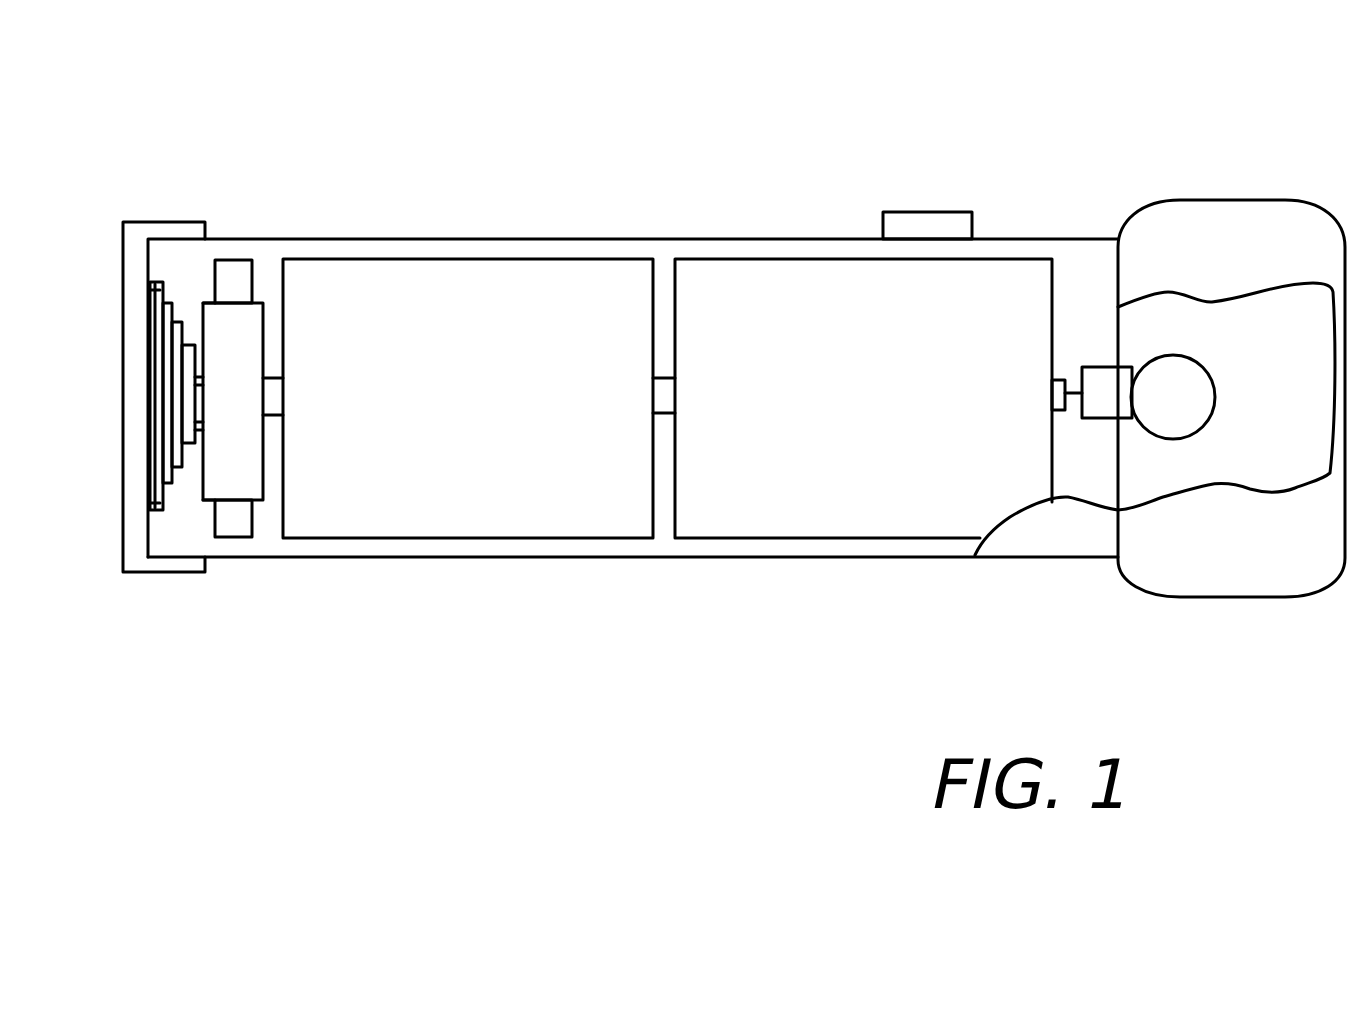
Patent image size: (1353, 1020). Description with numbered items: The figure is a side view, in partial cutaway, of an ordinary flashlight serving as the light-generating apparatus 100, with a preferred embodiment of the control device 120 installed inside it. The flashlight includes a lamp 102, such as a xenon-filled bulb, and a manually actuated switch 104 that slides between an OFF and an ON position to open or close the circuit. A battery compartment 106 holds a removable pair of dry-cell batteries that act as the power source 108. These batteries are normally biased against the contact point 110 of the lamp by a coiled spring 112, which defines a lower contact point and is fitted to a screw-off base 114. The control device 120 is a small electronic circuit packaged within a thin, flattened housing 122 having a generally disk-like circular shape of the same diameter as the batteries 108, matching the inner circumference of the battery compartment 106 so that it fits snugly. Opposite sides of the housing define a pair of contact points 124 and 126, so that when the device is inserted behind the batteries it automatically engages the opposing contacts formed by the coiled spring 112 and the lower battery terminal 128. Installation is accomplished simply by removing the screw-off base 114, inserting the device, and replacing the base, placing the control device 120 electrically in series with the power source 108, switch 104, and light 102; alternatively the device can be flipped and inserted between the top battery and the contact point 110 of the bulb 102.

The light-generating apparatus 100 is at (1150, 167).
The lamp 102 is at (1204, 362).
The switch 104 is at (905, 212).
The battery compartment 106 is at (665, 547).
The power source 108 is at (468, 422).
The contact point 110 is at (1074, 392).
The coiled spring 112 is at (183, 323).
The screw-off base 114 is at (123, 263).
The control device 120 is at (213, 523).
The housing 122 is at (238, 537).
The contact point 124 is at (263, 320).
The contact point 126 is at (203, 480).
The lower battery terminal 128 is at (282, 508).